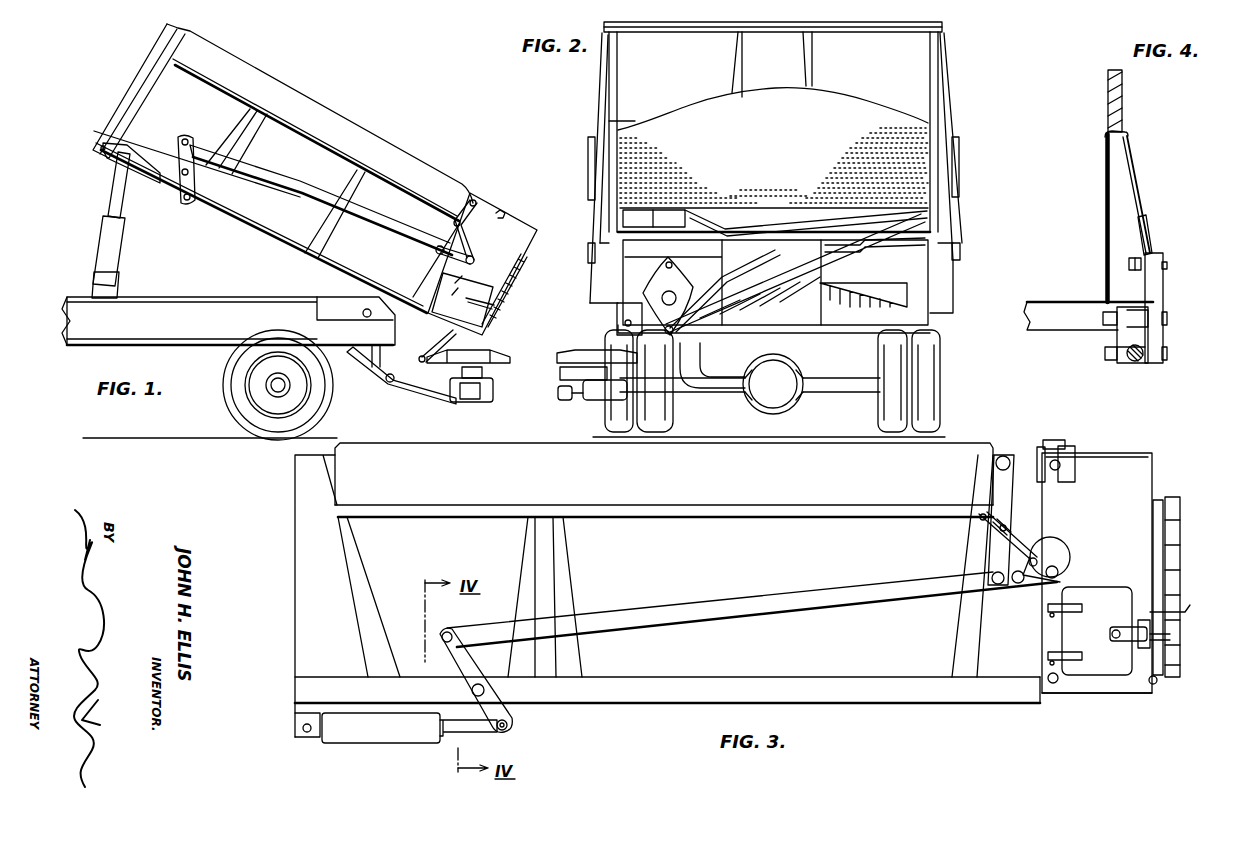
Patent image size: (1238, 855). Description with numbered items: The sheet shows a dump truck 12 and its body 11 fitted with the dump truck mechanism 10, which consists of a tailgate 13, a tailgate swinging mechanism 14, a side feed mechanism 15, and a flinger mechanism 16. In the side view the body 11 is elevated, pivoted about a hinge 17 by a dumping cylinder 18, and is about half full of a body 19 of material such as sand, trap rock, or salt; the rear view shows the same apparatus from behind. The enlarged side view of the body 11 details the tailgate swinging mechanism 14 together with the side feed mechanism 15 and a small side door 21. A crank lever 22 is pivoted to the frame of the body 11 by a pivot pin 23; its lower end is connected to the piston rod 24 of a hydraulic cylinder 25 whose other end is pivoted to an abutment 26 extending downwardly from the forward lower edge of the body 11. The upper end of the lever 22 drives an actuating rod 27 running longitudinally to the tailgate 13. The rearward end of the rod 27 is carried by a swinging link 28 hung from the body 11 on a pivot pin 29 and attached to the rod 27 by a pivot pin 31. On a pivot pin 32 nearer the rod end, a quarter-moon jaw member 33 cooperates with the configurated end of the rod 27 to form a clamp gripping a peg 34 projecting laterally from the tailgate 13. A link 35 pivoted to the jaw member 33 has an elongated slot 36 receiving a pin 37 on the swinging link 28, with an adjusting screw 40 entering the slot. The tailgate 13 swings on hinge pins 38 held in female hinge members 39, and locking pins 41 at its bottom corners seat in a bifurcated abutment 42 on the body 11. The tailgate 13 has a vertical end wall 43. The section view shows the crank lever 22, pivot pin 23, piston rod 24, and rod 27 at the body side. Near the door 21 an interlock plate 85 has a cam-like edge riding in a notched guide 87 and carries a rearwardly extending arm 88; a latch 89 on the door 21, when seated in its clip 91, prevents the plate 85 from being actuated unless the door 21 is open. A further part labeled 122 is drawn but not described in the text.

In FIG. 1, the dump truck mechanism 10 is at (546, 249).
In FIG. 2, the dump truck mechanism 10 is at (647, 273).
In FIG. 3, the dump truck mechanism 10 is at (1191, 518).
In FIG. 1, the body 11 is at (326, 106).
In FIG. 2, the body 11 is at (948, 60).
In FIG. 3, the body 11 is at (972, 443).
In FIG. 4, the body 11 is at (1105, 220).
In FIG. 1, the dump truck 12 is at (94, 219).
In FIG. 2, the dump truck 12 is at (977, 249).
In FIG. 1, the tailgate 13 is at (522, 216).
In FIG. 2, the tailgate 13 is at (852, 223).
In FIG. 3, the tailgate 13 is at (1108, 452).
In FIG. 1, the tailgate swinging mechanism 14 is at (295, 185).
In FIG. 3, the tailgate swinging mechanism 14 is at (678, 630).
In FIG. 1, the side feed mechanism 15 is at (536, 292).
In FIG. 2, the side feed mechanism 15 is at (803, 297).
In FIG. 3, the side feed mechanism 15 is at (1185, 678).
In FIG. 1, the flinger mechanism 16 is at (495, 372).
In FIG. 2, the flinger mechanism 16 is at (563, 407).
In FIG. 1, the hinge 17 is at (353, 283).
In FIG. 1, the dumping cylinder 18 is at (122, 255).
In FIG. 2, the body of material 19 is at (776, 152).
In FIG. 3, the small side door 21 is at (1100, 690).
In FIG. 3, the crank lever 22 is at (512, 712).
In FIG. 4, the crank lever 22 is at (1164, 342).
In FIG. 3, the pivot pin 23 is at (486, 691).
In FIG. 4, the pivot pin 23 is at (1168, 318).
In FIG. 3, the piston rod 24 is at (473, 733).
In FIG. 4, the piston rod 24 is at (1136, 361).
In FIG. 3, the hydraulic cylinder 25 is at (377, 744).
In FIG. 3, the abutment 26 is at (295, 726).
In FIG. 3, the actuating rod 27 is at (610, 608).
In FIG. 4, the actuating rod 27 is at (1152, 231).
In FIG. 3, the swinging link 28 is at (1010, 497).
In FIG. 3, the pivot pin 29 is at (1003, 457).
In FIG. 3, the pivot pin 31 is at (996, 585).
In FIG. 3, the pivot pin 32 is at (1017, 585).
In FIG. 3, the jaw member 33 is at (1050, 545).
In FIG. 3, the peg 34 is at (1059, 570).
In FIG. 3, the link 35 is at (1012, 546).
In FIG. 3, the elongated slot 36 is at (1004, 526).
In FIG. 3, the pin 37 is at (1000, 530).
In FIG. 3, the hinge pin 38 is at (1066, 445).
In FIG. 3, the female hinge member 39 is at (1052, 440).
In FIG. 3, the adjusting screw 40 is at (980, 518).
In FIG. 3, the locking pin 41 is at (1060, 690).
In FIG. 3, the bifurcated abutment 42 is at (1051, 684).
In FIG. 3, the vertical end wall 43 is at (1133, 462).
In FIG. 3, the interlock plate 85 is at (1154, 684).
In FIG. 3, the notched guide 87 is at (1172, 636).
In FIG. 3, the rearwardly extending arm 88 is at (1186, 612).
In FIG. 3, the latch 89 is at (1097, 631).
In FIG. 3, the clip 91 is at (1127, 625).
In FIG. 1, the hitch bar 122 is at (428, 391).